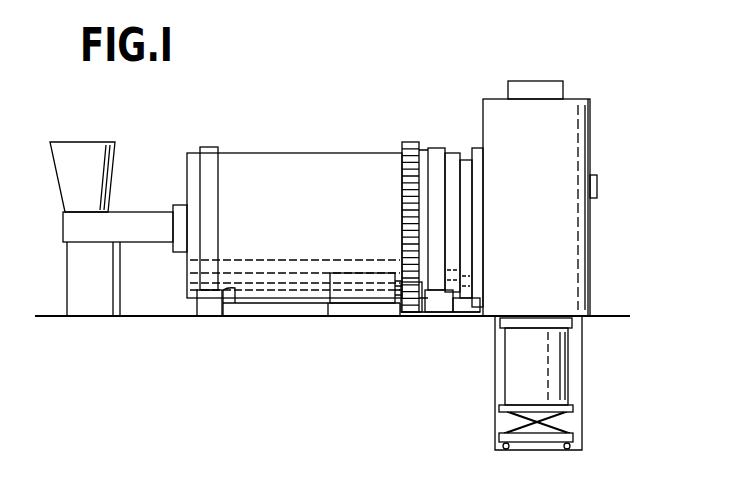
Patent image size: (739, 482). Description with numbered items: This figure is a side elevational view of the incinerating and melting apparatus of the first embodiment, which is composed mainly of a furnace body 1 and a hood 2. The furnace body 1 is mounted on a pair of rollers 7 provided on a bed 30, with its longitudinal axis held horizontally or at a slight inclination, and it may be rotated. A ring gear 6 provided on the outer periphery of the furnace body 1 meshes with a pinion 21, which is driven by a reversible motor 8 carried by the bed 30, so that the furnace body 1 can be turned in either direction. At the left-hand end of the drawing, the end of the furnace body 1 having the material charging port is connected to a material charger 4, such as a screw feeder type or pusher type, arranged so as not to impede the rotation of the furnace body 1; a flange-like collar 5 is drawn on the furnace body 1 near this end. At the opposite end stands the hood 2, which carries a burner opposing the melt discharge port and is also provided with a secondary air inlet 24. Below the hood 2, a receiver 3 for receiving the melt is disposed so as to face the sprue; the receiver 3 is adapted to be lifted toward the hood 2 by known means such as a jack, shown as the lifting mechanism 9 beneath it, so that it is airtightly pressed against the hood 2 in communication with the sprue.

The furnace body 1 is at (305, 152).
The hood 2 is at (593, 138).
The receiver 3 is at (568, 360).
The material charger 4 is at (112, 173).
The flange 5 is at (207, 147).
The ring gear 6 is at (409, 142).
The rollers 7 is at (226, 288).
The reversible motor 8 is at (353, 297).
The lifting mechanism 9 is at (573, 437).
The pinion 21 is at (400, 297).
The secondary air inlet 24 is at (598, 190).
The bed 30 is at (438, 317).